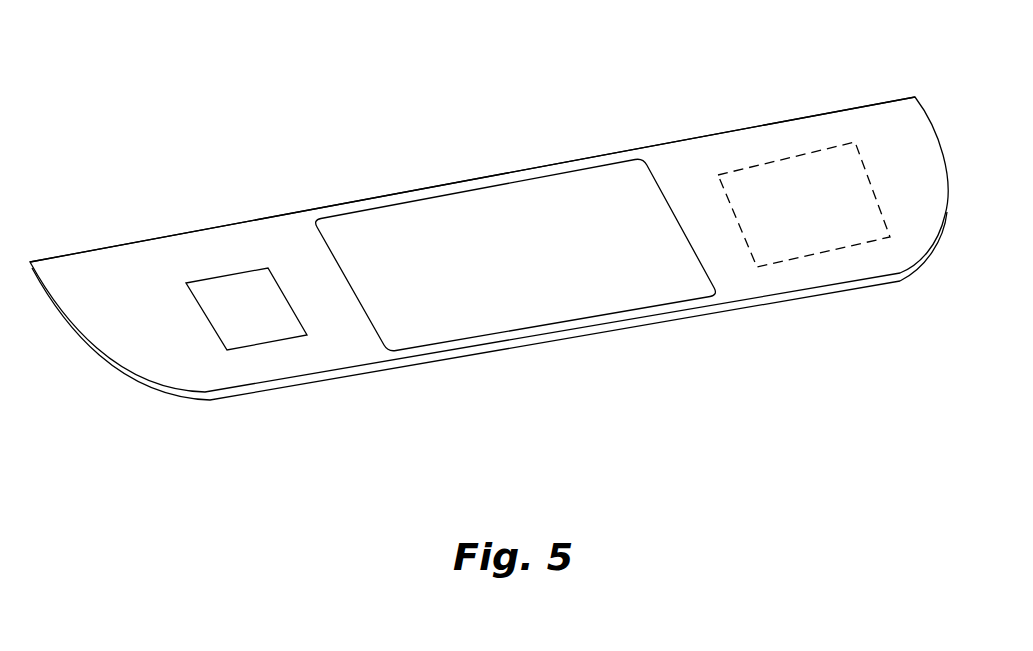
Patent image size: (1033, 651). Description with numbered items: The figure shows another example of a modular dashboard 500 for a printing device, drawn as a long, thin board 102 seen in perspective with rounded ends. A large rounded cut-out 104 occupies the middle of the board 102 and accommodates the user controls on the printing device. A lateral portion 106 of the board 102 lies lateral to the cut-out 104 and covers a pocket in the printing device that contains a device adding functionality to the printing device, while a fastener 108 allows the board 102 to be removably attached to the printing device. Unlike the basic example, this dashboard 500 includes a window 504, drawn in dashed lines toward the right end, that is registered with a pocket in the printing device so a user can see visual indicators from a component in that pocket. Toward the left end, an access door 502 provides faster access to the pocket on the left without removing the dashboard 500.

The dashboard 500 is at (379, 128).
The board 102 is at (677, 168).
The cut-out 104 is at (565, 197).
The lateral portion 106 is at (362, 347).
The fastener 108 is at (142, 242).
The access door 502 is at (247, 325).
The window 504 is at (798, 185).